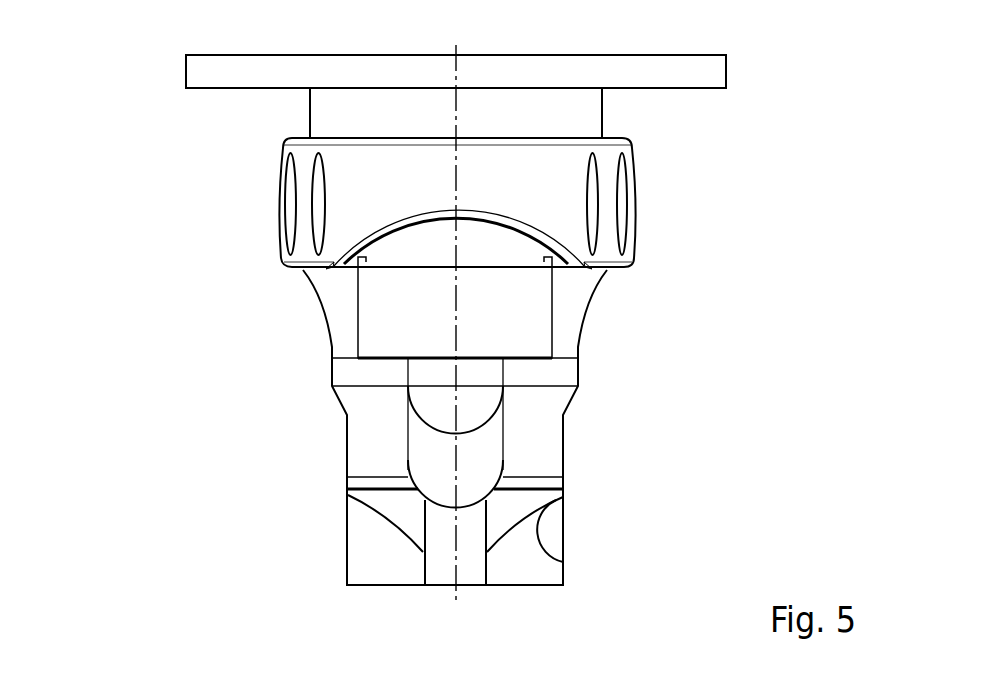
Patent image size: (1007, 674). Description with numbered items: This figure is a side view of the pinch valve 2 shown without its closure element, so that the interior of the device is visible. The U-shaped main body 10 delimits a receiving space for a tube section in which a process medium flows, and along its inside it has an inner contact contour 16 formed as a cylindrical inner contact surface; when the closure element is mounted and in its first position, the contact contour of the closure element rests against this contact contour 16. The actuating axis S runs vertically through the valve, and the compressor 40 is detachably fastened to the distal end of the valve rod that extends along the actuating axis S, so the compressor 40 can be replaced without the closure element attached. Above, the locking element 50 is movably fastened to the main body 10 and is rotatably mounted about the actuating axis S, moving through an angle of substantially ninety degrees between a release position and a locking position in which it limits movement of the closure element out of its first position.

The pinch valve 2 is at (94, 116).
The actuating axis S is at (448, 45).
The main body 10 is at (370, 560).
The contact contour 16 is at (445, 490).
The compressor 40 is at (435, 383).
The locking element 50 is at (620, 200).